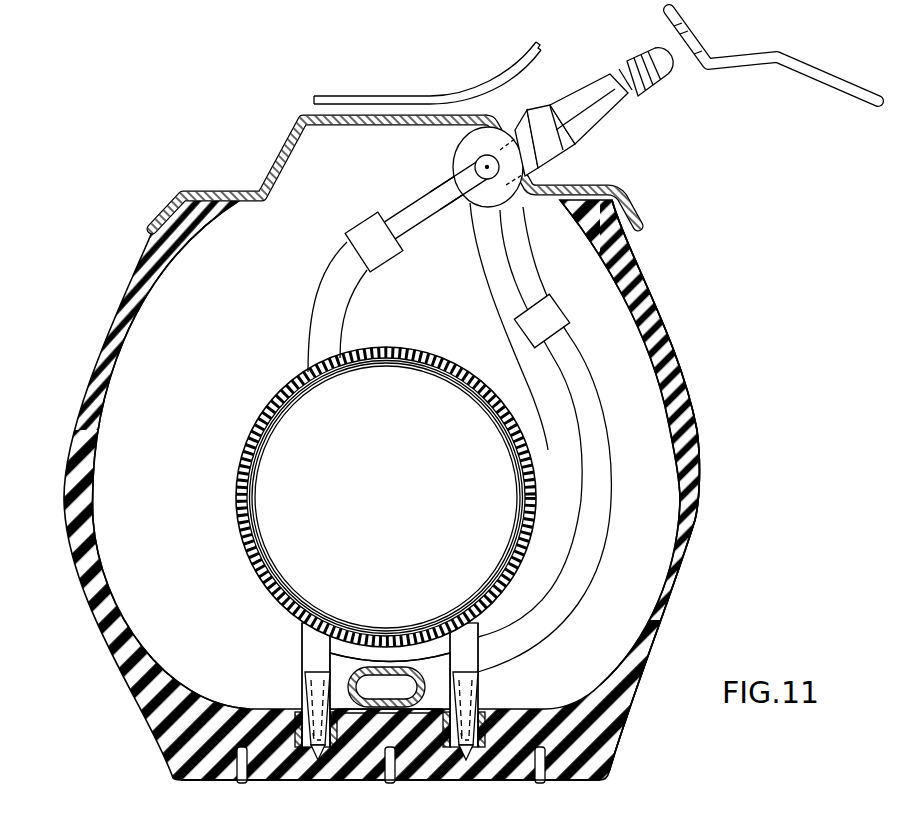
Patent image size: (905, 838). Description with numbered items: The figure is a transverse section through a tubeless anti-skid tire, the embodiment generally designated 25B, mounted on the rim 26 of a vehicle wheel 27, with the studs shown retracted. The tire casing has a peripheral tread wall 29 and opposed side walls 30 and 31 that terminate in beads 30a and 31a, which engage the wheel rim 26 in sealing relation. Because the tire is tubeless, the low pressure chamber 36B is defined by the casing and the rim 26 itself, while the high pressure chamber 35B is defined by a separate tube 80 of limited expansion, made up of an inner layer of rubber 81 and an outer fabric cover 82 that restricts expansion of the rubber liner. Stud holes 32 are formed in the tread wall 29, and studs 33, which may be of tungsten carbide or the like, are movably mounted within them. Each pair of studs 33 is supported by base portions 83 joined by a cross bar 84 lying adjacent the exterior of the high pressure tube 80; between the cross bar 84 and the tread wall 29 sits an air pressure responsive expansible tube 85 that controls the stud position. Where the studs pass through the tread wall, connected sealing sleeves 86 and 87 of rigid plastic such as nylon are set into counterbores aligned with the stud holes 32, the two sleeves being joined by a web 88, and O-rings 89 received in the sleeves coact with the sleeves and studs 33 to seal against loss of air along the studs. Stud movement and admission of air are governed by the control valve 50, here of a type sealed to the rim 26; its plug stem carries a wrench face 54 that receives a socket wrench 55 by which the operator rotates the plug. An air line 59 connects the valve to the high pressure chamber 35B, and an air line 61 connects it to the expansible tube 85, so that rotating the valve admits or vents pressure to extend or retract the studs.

The tubeless tire embodiment 25B is at (697, 354).
The rim 26 is at (413, 174).
The vehicle wheel 27 is at (526, 86).
The tread wall 29 is at (560, 782).
The side wall 30 is at (74, 430).
The bead 30a is at (182, 197).
The side wall 31 is at (702, 440).
The bead 31a is at (605, 220).
The stud holes 32 is at (330, 770).
The studs 33 is at (320, 760).
The high pressure chamber 35B is at (414, 503).
The low pressure chamber 36B is at (226, 396).
The control valve 50 is at (594, 112).
The wrench face 54 is at (556, 148).
The socket wrench 55 is at (795, 70).
The air line 59 is at (338, 264).
The air line 61 is at (610, 460).
The tube 80 is at (411, 342).
The inner layer of rubber 81 is at (440, 370).
The outer fabric cover 82 is at (440, 363).
The base portions 83 is at (312, 650).
The cross bar 84 is at (385, 660).
The air pressure responsive expansible tube 85 is at (407, 657).
The sealing sleeve 86 is at (295, 712).
The sealing sleeve 87 is at (497, 714).
The web 88 is at (440, 658).
The O-rings 89 is at (378, 768).